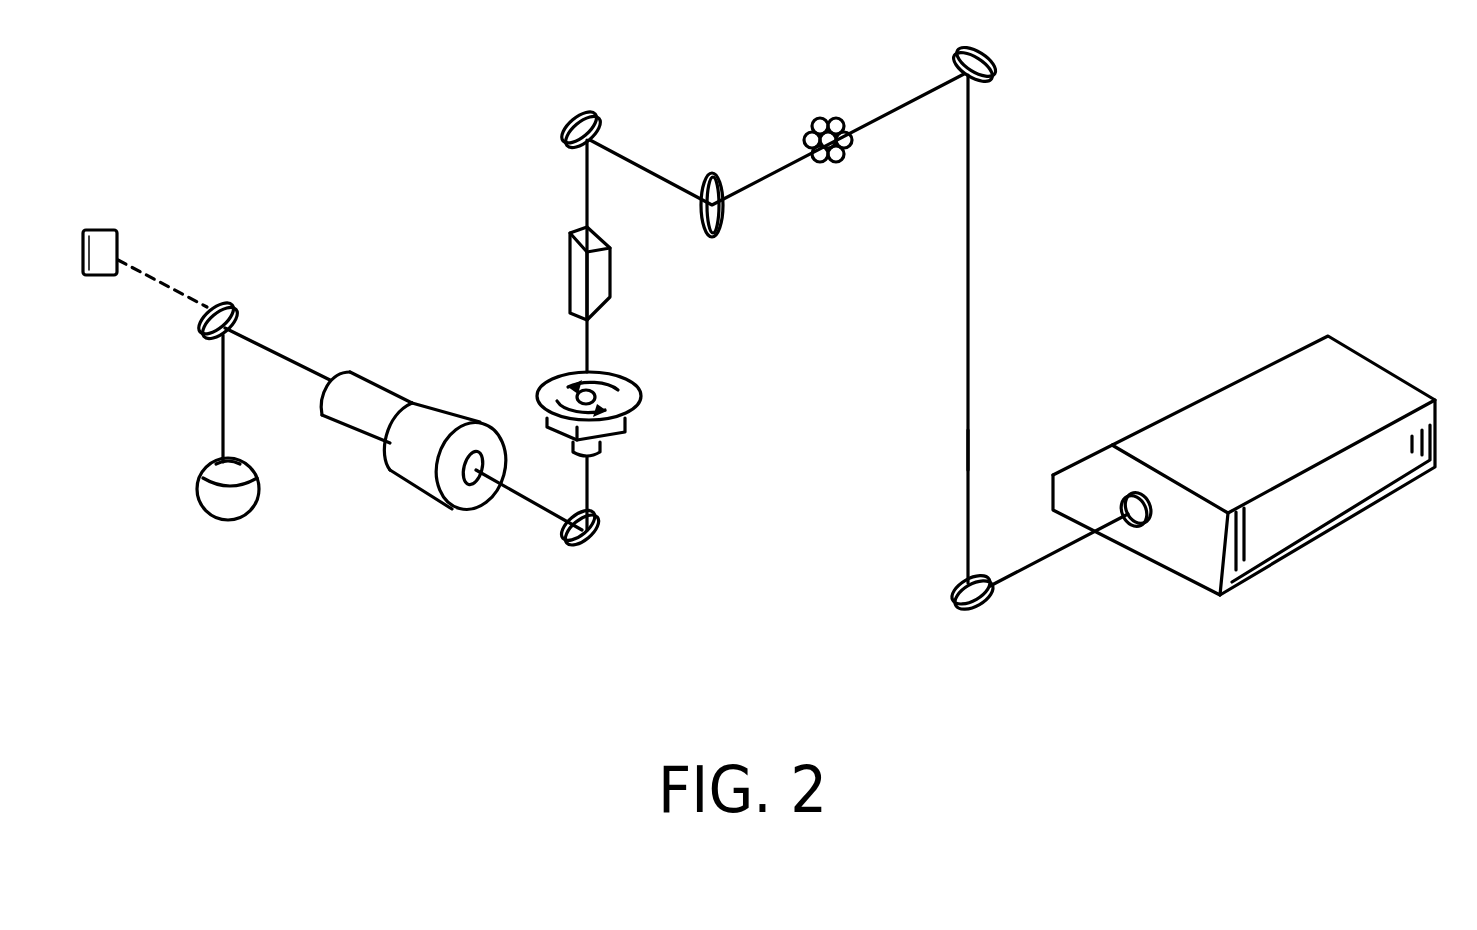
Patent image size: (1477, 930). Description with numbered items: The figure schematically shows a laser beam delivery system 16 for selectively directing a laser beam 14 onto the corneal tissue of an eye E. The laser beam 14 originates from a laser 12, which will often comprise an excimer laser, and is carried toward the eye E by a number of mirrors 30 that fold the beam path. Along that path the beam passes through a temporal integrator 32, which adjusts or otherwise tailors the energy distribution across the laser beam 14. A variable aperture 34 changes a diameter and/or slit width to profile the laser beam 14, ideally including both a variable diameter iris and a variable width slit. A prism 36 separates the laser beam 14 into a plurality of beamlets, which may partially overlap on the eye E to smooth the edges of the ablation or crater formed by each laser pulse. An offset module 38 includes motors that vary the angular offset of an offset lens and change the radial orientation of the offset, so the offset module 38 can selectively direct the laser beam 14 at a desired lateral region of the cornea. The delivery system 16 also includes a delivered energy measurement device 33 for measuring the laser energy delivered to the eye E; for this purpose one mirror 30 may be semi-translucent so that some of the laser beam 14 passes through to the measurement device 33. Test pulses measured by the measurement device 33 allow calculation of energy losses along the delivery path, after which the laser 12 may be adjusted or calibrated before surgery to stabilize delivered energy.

The laser 12 is at (1215, 417).
The laser beam 14 is at (967, 442).
The laser beam delivery system 16 is at (1088, 210).
The mirrors 30 is at (982, 62).
The temporal integrator 32 is at (570, 273).
The delivered energy measurement device 33 is at (103, 230).
The variable aperture 34 is at (615, 370).
The prism 36 is at (823, 118).
The offset module 38 is at (415, 396).
The eye E is at (195, 492).